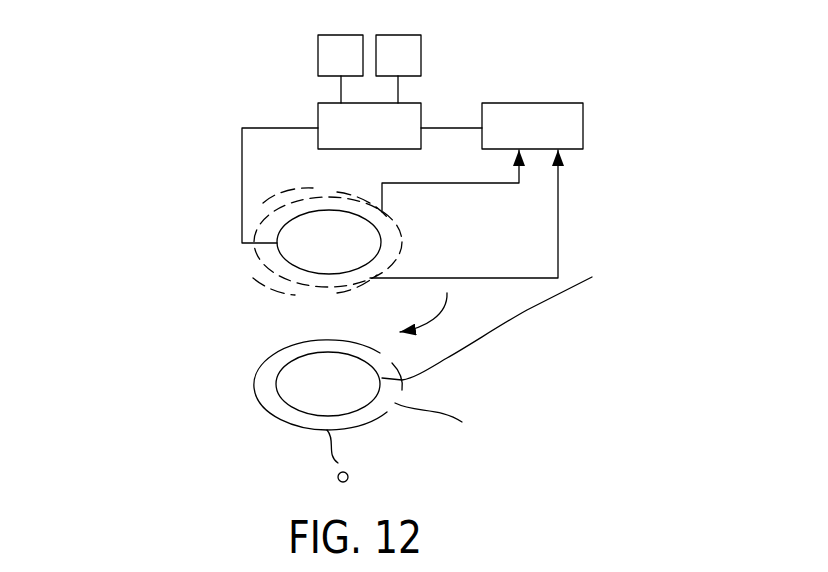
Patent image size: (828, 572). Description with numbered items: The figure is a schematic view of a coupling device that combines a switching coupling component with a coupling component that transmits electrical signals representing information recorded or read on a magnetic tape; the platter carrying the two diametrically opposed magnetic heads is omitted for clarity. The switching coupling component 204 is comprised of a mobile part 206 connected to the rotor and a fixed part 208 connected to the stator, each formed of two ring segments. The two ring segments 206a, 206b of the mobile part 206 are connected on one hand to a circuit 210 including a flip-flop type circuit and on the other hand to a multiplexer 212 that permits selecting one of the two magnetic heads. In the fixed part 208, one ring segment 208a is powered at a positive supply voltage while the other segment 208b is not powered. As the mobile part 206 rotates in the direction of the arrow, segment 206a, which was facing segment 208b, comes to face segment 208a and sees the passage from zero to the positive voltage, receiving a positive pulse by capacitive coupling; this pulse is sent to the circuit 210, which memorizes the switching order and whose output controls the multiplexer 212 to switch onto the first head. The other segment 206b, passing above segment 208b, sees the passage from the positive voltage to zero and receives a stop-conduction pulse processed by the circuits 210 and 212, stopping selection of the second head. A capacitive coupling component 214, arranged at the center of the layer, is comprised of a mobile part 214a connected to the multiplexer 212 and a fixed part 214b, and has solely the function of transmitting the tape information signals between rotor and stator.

The coupling component 204 is at (287, 402).
The mobile part 206 is at (223, 248).
The ring segment 206a is at (252, 209).
The ring segment 206b is at (240, 273).
The fixed part 208 is at (329, 425).
The ring segment 208a is at (400, 388).
The ring segment 208b is at (253, 372).
The circuit 210 is at (532, 126).
The multiplexer 212 is at (362, 139).
The capacitive coupling component 214 is at (553, 265).
The mobile part 214a is at (383, 243).
The fixed part 214b is at (665, 208).